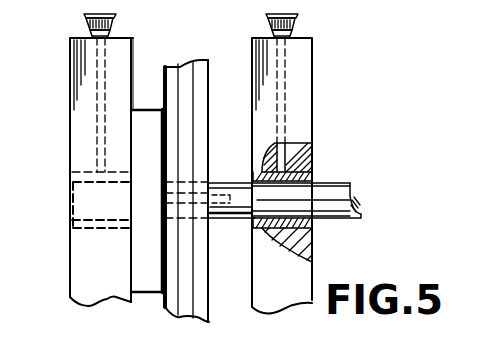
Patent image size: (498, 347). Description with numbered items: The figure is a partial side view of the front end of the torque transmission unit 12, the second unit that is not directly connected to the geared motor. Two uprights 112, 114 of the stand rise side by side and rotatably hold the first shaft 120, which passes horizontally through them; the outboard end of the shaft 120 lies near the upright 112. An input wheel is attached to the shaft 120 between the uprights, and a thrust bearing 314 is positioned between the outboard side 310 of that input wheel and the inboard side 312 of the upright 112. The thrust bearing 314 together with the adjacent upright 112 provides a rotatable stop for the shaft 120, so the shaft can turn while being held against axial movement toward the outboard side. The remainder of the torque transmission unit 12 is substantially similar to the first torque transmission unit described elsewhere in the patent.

The torque transmission unit 12 is at (314, 72).
The upright 112 is at (69, 133).
The upright 114 is at (312, 97).
The first shaft 120 is at (238, 182).
The outboard side of input wheel 310 is at (164, 67).
The inboard side of upright 312 is at (133, 53).
The thrust bearing 314 is at (148, 110).